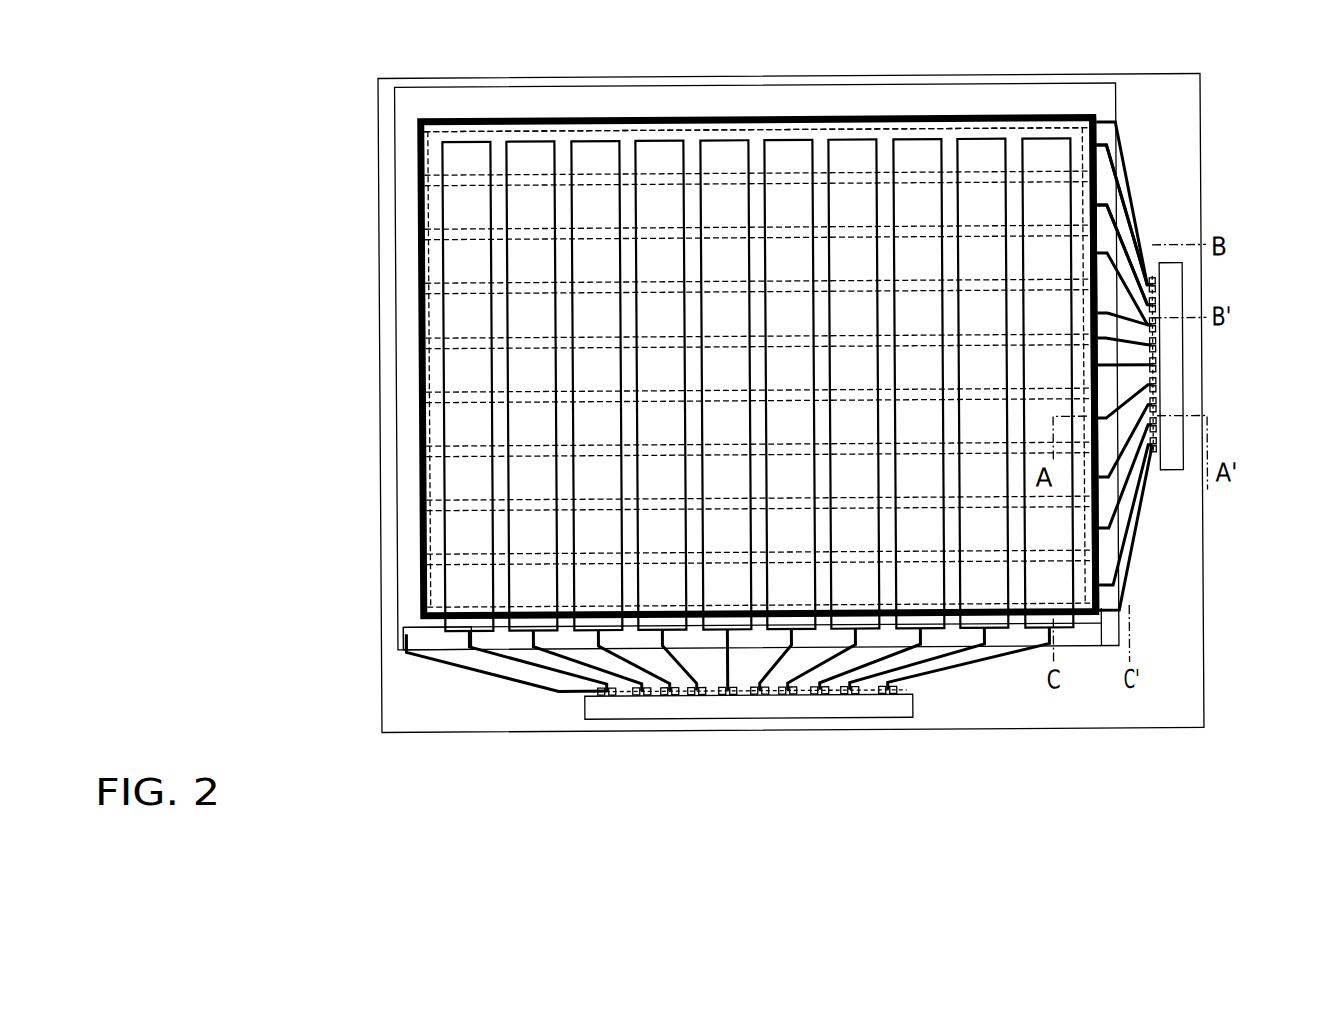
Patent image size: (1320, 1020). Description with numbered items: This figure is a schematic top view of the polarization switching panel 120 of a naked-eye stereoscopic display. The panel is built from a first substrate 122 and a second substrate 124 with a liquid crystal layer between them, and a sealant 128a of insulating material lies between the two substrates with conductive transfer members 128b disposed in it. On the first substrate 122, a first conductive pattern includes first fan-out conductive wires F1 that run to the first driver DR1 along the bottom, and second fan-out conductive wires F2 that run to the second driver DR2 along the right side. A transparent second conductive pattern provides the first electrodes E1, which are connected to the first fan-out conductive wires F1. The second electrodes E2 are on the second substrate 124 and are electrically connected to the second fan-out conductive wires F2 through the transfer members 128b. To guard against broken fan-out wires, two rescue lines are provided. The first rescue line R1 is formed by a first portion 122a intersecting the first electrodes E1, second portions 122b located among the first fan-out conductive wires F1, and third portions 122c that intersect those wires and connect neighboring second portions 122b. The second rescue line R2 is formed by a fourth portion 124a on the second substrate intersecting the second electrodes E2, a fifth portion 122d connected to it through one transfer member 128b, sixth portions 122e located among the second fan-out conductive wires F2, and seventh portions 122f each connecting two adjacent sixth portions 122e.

The polarization switching panel 120 is at (1268, 773).
The first substrate 122 is at (1203, 604).
The first portion 122a is at (402, 635).
The second portions 122b is at (683, 695).
The third portions 122c is at (817, 695).
The fifth portion 122d is at (1140, 188).
The sixth portions 122e is at (1160, 315).
The seventh portions 122f is at (1160, 331).
The second substrate 124 is at (396, 529).
The fourth portion 124a is at (1087, 149).
The sealant 128a is at (1047, 114).
The transfer members 128b is at (1093, 114).
The first electrodes E1 is at (453, 638).
The second electrodes E2 is at (833, 127).
The first fan-out conductive wires F1 is at (968, 655).
The second fan-out conductive wires F2 is at (1140, 218).
The first rescue line R1 is at (522, 693).
The second rescue line R2 is at (1133, 150).
The first driver DR1 is at (749, 708).
The second driver DR2 is at (1172, 366).